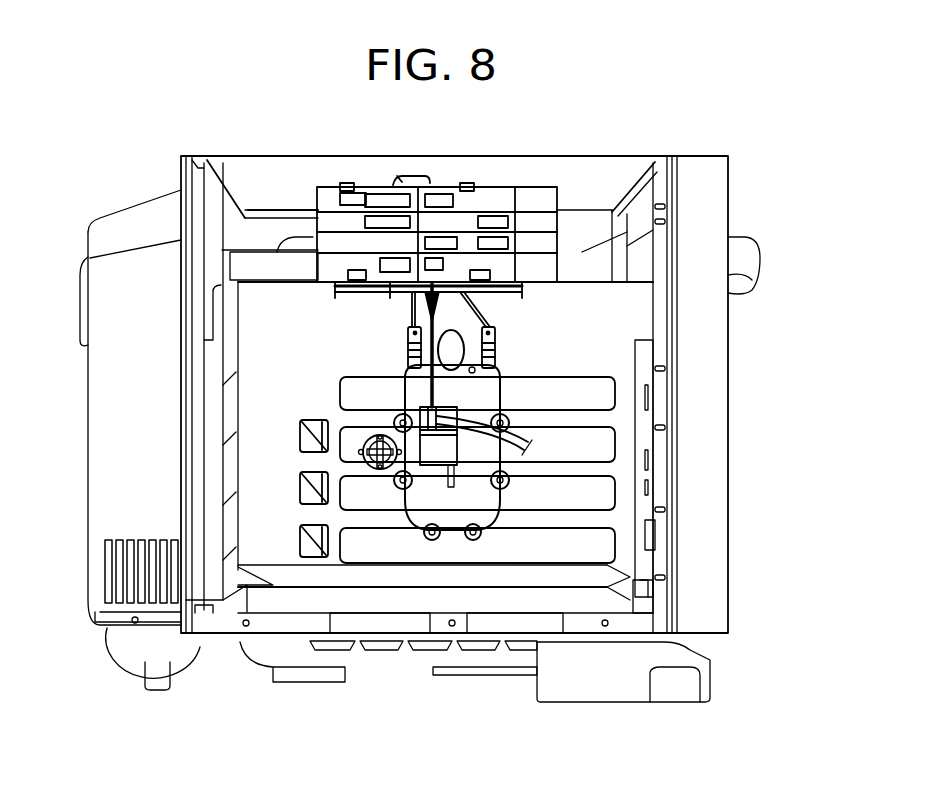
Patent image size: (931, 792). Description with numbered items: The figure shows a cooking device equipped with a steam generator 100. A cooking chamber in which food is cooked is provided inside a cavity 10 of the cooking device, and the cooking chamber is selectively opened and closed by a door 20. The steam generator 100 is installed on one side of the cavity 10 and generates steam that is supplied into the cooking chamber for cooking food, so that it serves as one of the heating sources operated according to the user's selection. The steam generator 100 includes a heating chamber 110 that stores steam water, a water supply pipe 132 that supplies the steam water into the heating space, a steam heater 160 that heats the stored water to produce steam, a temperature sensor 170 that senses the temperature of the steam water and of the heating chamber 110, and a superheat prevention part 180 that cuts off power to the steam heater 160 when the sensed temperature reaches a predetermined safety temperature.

The cavity 10 is at (568, 283).
The door 20 is at (705, 588).
The steam generator 100 is at (576, 517).
The heating chamber 110 is at (422, 503).
The water supply pipe 132 is at (455, 477).
The steam heater 160 is at (495, 337).
The temperature sensor 170 is at (435, 393).
The superheat prevention part 180 is at (366, 450).